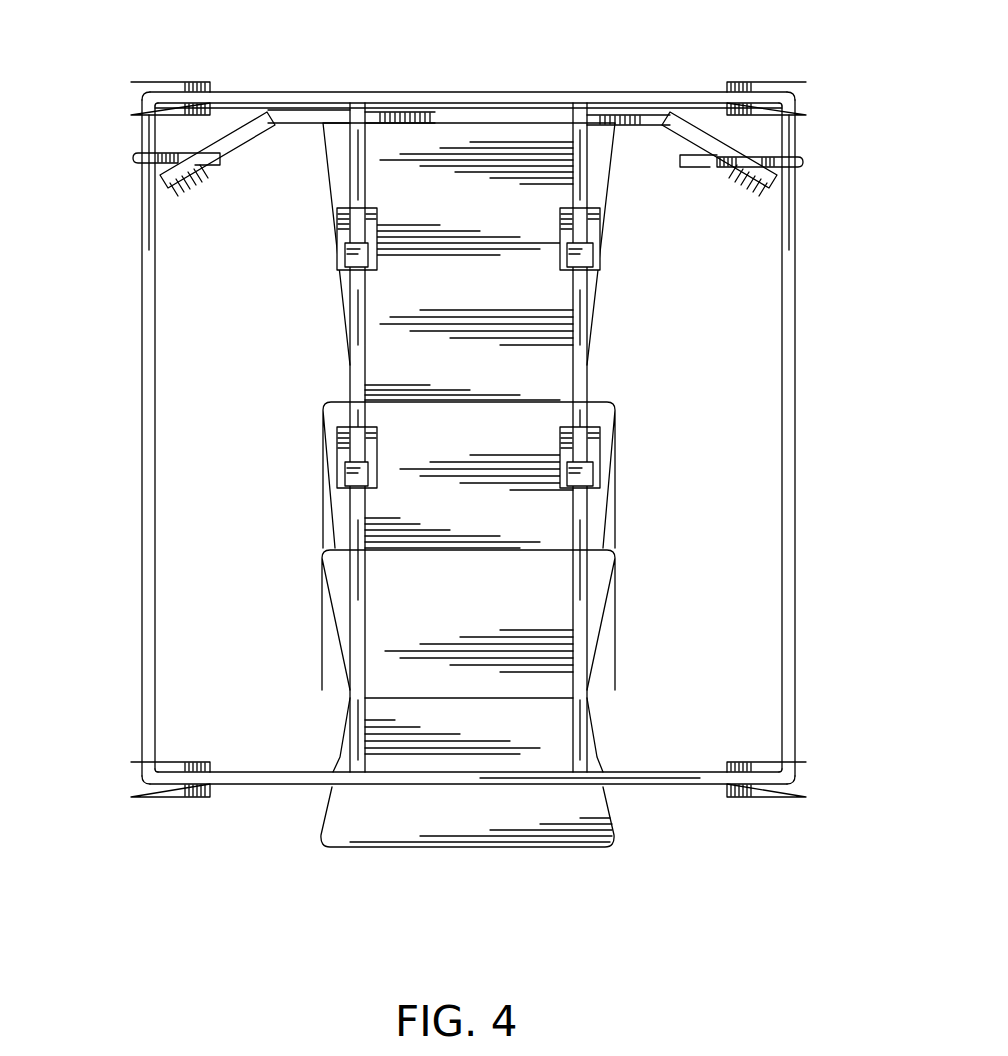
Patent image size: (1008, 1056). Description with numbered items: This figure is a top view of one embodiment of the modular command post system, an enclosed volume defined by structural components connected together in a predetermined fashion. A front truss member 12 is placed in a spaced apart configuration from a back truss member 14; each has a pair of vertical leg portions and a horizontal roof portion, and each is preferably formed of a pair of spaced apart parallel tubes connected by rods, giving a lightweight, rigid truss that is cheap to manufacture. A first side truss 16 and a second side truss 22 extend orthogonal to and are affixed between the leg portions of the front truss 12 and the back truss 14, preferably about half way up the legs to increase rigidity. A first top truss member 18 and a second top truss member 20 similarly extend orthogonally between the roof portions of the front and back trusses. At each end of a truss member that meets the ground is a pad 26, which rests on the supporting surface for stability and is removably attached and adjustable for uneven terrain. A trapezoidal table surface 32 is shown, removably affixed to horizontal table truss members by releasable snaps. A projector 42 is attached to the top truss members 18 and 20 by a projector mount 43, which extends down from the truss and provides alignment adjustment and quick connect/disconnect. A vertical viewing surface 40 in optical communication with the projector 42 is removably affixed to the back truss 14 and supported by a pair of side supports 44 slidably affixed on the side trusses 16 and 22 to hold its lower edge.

The front truss member 12 is at (673, 778).
The back truss member 14 is at (435, 90).
The first side truss 16 is at (146, 510).
The first top truss member 18 is at (352, 384).
The second top truss member 20 is at (588, 384).
The second side truss 22 is at (798, 525).
The pad 26 is at (170, 91).
The table surface 32 is at (335, 838).
The vertical viewing surface 40 is at (693, 140).
The projector 42 is at (338, 232).
The projector mount 43 is at (345, 255).
The side support 44 is at (133, 157).